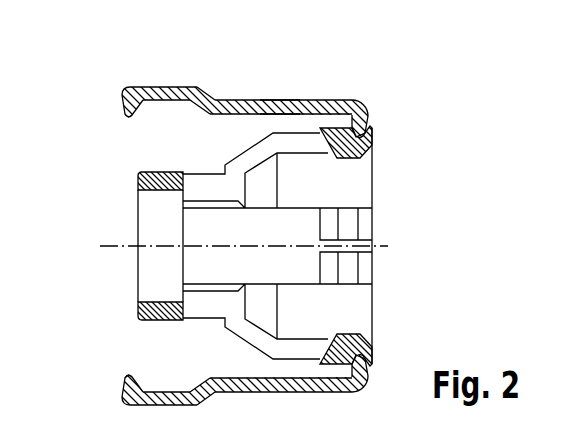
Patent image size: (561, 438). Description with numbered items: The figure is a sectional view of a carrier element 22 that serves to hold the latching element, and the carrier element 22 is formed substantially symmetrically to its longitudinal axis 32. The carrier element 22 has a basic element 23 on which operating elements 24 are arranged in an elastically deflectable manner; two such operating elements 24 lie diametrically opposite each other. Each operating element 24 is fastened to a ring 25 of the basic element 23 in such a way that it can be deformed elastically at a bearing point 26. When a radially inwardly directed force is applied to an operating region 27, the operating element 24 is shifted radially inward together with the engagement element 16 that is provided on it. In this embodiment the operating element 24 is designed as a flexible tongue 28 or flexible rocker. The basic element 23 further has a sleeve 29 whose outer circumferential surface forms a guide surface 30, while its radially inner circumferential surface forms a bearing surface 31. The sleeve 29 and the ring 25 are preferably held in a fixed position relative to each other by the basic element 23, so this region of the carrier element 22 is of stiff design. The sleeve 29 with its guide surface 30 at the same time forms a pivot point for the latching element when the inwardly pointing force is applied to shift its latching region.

The engagement element 16 is at (118, 126).
The carrier element 22 is at (306, 80).
The basic element 23 is at (384, 160).
The operating element 24 is at (224, 82).
The ring 25 is at (372, 120).
The bearing point 26 is at (357, 85).
The operating region 27 is at (141, 87).
The flexible tongue 28 is at (281, 100).
The sleeve 29 is at (138, 304).
The guide surface 30 is at (166, 171).
The bearing surface 31 is at (158, 192).
The longitudinal axis 32 is at (104, 247).